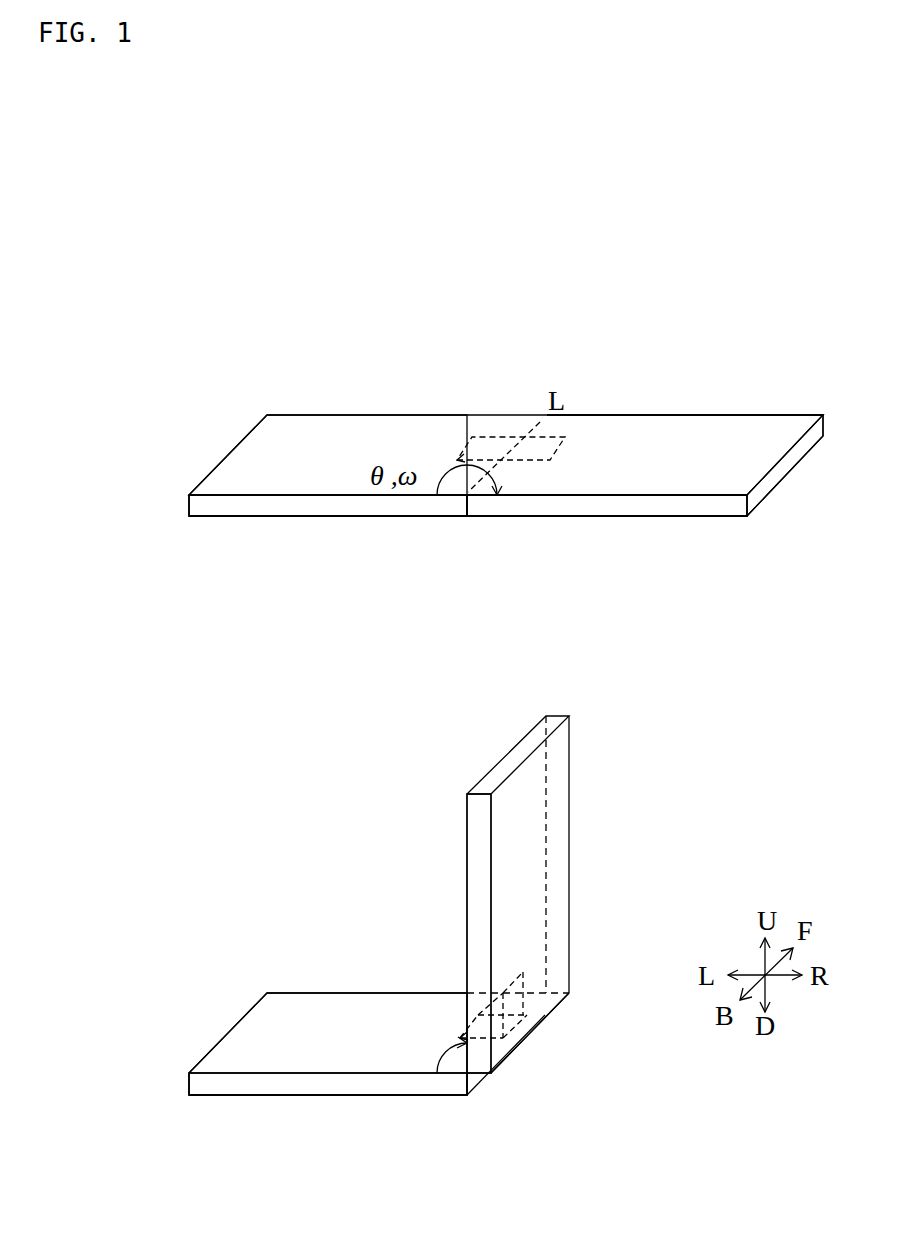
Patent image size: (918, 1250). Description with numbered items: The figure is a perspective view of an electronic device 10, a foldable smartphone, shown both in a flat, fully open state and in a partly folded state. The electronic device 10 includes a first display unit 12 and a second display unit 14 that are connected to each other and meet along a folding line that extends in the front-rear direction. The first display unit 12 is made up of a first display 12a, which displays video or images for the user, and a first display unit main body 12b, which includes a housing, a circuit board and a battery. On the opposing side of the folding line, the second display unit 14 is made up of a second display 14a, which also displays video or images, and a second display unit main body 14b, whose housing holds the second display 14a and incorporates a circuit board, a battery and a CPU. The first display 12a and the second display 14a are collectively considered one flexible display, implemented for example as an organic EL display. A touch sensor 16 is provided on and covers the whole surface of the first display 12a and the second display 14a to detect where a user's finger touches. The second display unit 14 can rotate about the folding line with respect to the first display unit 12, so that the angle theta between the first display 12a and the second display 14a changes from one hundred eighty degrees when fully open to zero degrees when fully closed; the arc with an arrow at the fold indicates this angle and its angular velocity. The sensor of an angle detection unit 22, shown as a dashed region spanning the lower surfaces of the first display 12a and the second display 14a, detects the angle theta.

The electronic device 10 is at (258, 337).
The first display unit 12 is at (341, 518).
The first display 12a is at (387, 432).
The first display unit main body 12b is at (245, 505).
The second display unit 14 is at (650, 518).
The second display 14a is at (647, 432).
The second display unit main body 14b is at (572, 505).
The touch sensor 16 is at (440, 455).
The angle detection unit 22 is at (522, 450).